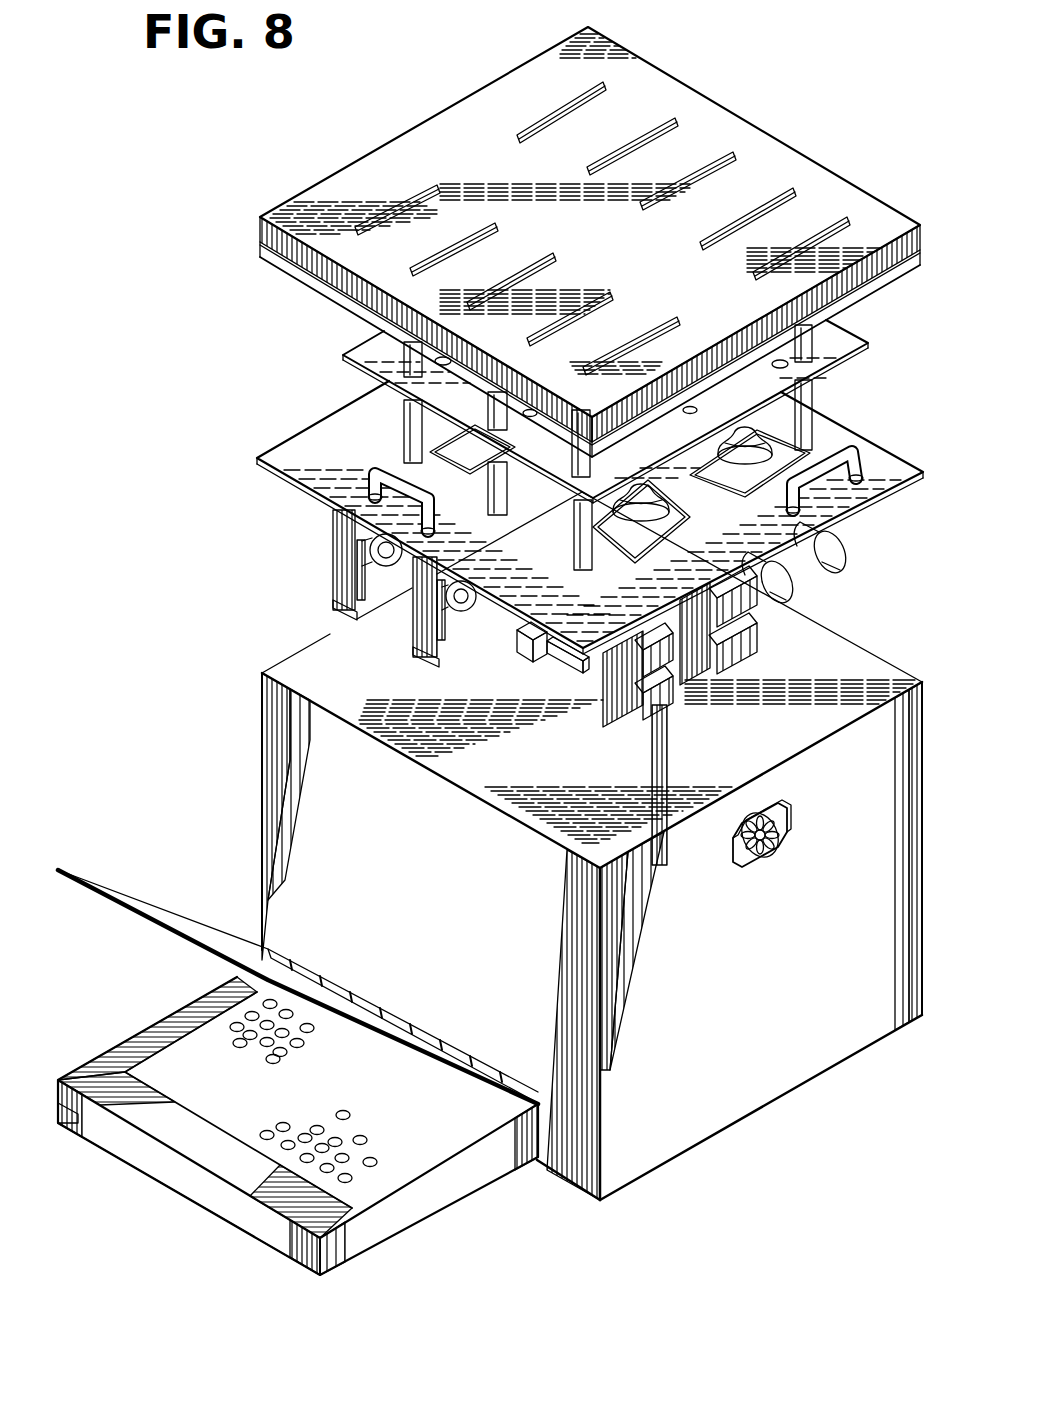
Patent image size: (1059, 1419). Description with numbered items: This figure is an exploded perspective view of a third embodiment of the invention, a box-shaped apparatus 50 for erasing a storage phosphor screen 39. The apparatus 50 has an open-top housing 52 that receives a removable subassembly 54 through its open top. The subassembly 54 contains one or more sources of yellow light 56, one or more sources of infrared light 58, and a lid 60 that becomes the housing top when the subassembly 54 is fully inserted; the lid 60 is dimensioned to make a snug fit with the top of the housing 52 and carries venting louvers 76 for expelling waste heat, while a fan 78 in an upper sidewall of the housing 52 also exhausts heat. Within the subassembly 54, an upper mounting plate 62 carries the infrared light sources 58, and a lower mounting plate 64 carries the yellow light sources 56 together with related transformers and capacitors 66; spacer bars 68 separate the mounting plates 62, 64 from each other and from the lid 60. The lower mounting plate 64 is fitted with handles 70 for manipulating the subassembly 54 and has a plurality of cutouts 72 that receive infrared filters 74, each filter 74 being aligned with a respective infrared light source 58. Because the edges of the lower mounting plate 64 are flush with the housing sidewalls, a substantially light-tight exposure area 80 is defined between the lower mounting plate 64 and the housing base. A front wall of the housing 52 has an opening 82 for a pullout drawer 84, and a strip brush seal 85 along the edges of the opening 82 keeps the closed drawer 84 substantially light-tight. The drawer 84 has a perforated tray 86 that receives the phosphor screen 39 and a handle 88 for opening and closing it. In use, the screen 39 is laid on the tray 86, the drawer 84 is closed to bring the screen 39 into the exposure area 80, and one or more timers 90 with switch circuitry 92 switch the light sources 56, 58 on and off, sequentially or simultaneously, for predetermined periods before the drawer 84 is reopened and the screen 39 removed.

The storage phosphor screen 39 is at (156, 910).
The box-shaped apparatus 50 is at (184, 337).
The housing 52 is at (258, 723).
The removable subassembly 54 is at (257, 431).
The sources of yellow light 56 is at (385, 568).
The sources of infrared light 58 is at (670, 522).
The lid 60 is at (694, 99).
The upper mounting plate 62 is at (358, 352).
The lower mounting plate 64 is at (833, 512).
The transformers and capacitors 66 is at (795, 583).
The spacer bars 68 is at (815, 336).
The handles 70 is at (440, 491).
The cutouts 72 is at (425, 451).
The infrared filters 74 is at (448, 445).
The venting louvers 76 is at (590, 169).
The fan 78 is at (776, 846).
The exposure area 80 is at (733, 1047).
The opening 82 is at (552, 1162).
The pullout drawer 84 is at (415, 1207).
The strip brush seal 85 is at (430, 1040).
The perforated tray 86 is at (215, 1045).
The handle 88 is at (165, 1156).
The timers 90 is at (520, 650).
The switch circuitry 92 is at (572, 659).